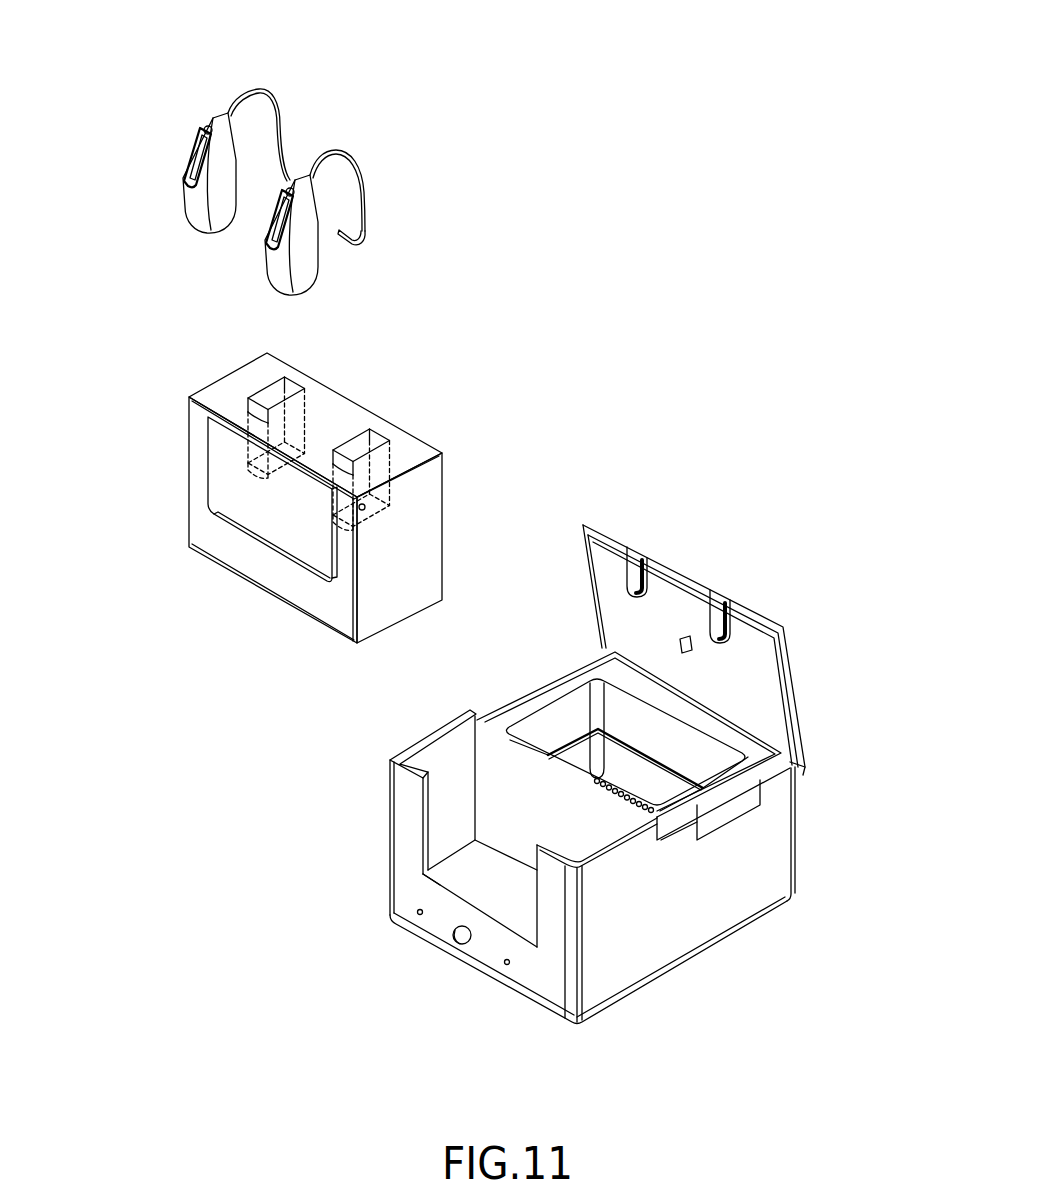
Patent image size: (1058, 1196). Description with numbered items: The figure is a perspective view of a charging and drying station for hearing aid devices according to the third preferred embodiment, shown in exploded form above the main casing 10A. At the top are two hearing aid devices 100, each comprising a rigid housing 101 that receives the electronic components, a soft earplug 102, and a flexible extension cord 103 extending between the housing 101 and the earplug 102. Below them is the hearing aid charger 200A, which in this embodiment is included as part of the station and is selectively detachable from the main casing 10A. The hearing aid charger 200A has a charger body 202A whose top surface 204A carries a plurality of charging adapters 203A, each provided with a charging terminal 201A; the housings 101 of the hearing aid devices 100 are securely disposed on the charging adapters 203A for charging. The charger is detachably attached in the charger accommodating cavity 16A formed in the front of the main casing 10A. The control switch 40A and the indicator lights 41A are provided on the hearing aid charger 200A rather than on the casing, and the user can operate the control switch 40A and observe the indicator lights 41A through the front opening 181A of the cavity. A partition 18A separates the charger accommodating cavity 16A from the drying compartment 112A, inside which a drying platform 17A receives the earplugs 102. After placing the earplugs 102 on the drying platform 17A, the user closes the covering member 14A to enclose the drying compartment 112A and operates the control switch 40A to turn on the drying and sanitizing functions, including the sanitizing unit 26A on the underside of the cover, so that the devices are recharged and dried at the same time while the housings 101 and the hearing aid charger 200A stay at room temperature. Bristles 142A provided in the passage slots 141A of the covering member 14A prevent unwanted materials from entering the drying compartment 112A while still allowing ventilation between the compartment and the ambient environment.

The hearing aid device 100 is at (238, 148).
The housing 101 is at (207, 127).
The earplug 102 is at (362, 180).
The extension cord 103 is at (260, 90).
The hearing aid charger 200A is at (305, 465).
The charging terminal 201A is at (261, 380).
The charger body 202A is at (223, 553).
The charging adapter 203A is at (348, 353).
The top surface 204A is at (403, 453).
The main casing 10A is at (571, 756).
The covering member 14A is at (769, 599).
The passage slot 141A is at (643, 557).
The bristles 142A is at (733, 597).
The sanitizing unit 26A is at (684, 636).
The drying compartment 112A is at (731, 788).
The drying platform 17A is at (647, 802).
The partition 18A is at (513, 777).
The front opening 181A is at (447, 877).
The charger accommodating cavity 16A is at (372, 964).
The control switch 40A is at (455, 940).
The indicator lights 41A is at (418, 913).